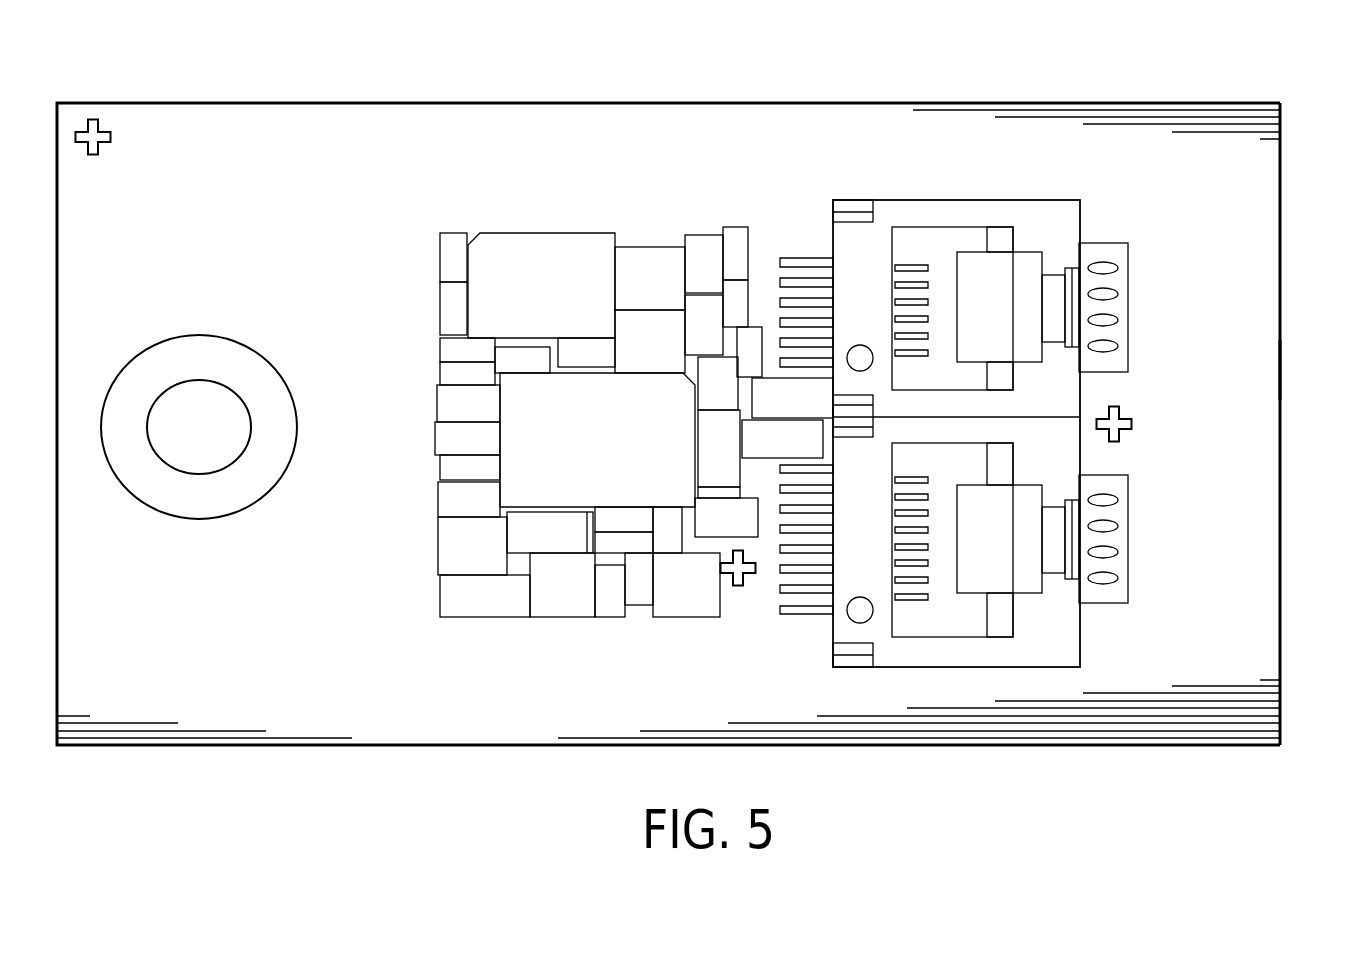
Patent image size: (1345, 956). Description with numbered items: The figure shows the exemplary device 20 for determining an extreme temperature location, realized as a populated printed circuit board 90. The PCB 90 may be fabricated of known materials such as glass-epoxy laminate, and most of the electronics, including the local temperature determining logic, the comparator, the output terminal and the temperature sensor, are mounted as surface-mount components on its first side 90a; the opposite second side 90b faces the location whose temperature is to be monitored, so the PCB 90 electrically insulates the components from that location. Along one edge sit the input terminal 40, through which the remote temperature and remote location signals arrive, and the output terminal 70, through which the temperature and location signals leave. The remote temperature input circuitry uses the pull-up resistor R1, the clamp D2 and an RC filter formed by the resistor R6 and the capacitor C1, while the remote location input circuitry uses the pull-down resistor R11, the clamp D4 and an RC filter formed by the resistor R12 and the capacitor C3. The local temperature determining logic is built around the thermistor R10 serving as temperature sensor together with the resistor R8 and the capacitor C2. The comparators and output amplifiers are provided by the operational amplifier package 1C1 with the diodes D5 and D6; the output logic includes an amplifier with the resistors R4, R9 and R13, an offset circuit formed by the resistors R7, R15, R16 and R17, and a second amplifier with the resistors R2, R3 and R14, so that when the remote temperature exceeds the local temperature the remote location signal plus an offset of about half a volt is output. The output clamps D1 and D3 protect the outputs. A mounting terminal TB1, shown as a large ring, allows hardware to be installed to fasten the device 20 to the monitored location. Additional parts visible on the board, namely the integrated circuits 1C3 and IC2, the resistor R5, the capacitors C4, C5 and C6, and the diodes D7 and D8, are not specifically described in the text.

The device 20 is at (826, 86).
The input terminal 40 is at (1013, 319).
The output terminal 70 is at (1013, 551).
The printed circuit board 90 is at (1262, 627).
The first side 90a is at (1244, 286).
The second side 90b is at (1282, 371).
The mounting terminal TB1 is at (203, 504).
The operational amplifier 1C1 is at (597, 440).
The integrated circuit 1C3 is at (541, 285).
The integrated circuit IC2 is at (472, 546).
The pull-up resistor R1 is at (749, 352).
The resistor R2 is at (610, 591).
The resistor R3 is at (639, 579).
The resistor R4 is at (522, 360).
The resistor R5 is at (485, 596).
The resistor R6 is at (586, 352).
The resistor R7 is at (467, 374).
The resistor R8 is at (470, 467).
The resistor R9 is at (624, 519).
The thermistor R10 is at (467, 438).
The pull-down resistor R11 is at (735, 303).
The resistor R12 is at (735, 253).
The resistor R13 is at (667, 530).
The resistor R14 is at (624, 543).
The resistor R15 is at (453, 257).
The resistor R16 is at (453, 308).
The resistor R17 is at (467, 350).
The capacitor C1 is at (704, 325).
The capacitor C2 is at (468, 403).
The capacitor C3 is at (704, 264).
The capacitor C4 is at (469, 499).
The capacitor C5 is at (718, 383).
The capacitor C6 is at (726, 517).
The output clamp D1 is at (562, 585).
The clamp D2 is at (650, 341).
The output clamp D3 is at (686, 585).
The clamp D4 is at (650, 278).
The diode D5 is at (719, 454).
The diode D6 is at (550, 532).
The diode D7 is at (792, 398).
The diode D8 is at (782, 439).